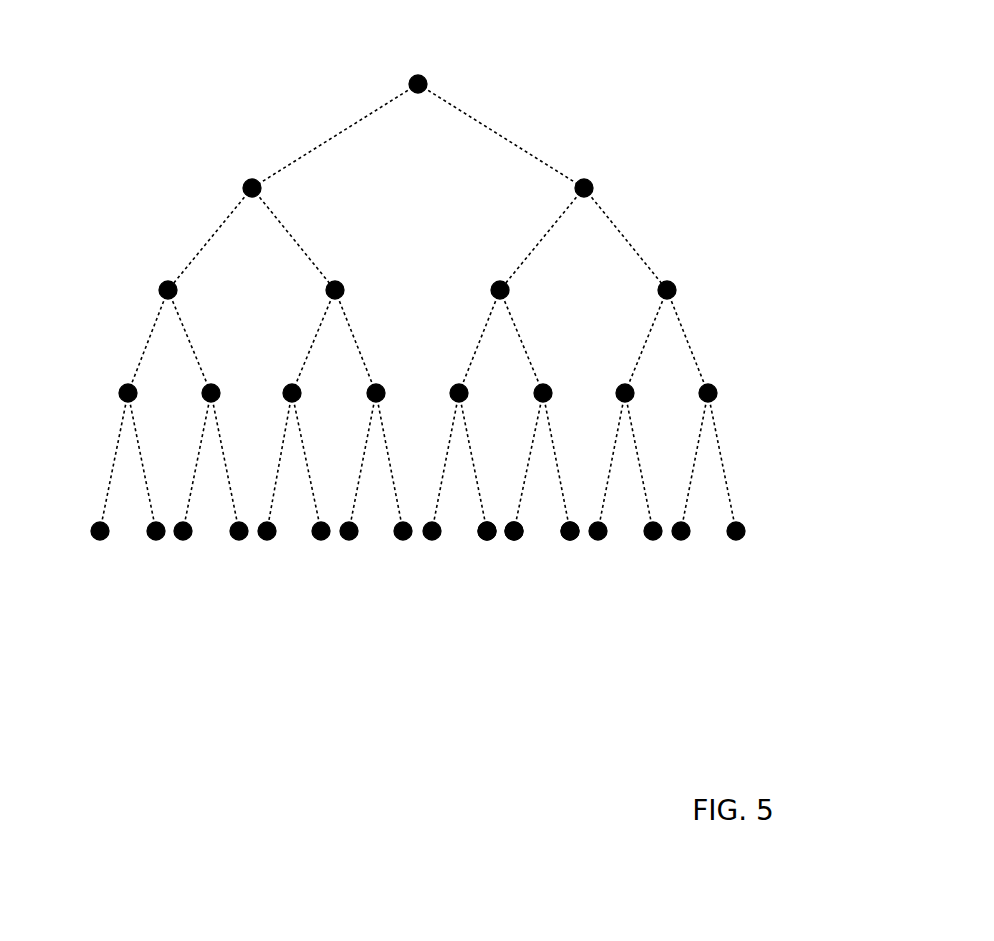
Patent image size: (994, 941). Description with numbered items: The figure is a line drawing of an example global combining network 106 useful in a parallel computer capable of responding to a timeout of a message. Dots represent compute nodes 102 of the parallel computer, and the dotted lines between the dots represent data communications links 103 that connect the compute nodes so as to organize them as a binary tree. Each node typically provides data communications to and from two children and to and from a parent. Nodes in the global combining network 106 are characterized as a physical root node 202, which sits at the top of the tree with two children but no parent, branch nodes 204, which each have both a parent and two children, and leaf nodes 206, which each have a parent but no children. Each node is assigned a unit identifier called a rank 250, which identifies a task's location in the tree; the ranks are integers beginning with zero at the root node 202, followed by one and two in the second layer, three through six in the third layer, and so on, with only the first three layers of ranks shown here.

The compute nodes 102 is at (483, 539).
The data communications links 103 is at (343, 130).
The global combining network 106 is at (447, 386).
The physical root node 202 is at (437, 74).
The branch nodes 204 is at (755, 140).
The leaf nodes 206 is at (755, 545).
The rank 250 is at (548, 195).